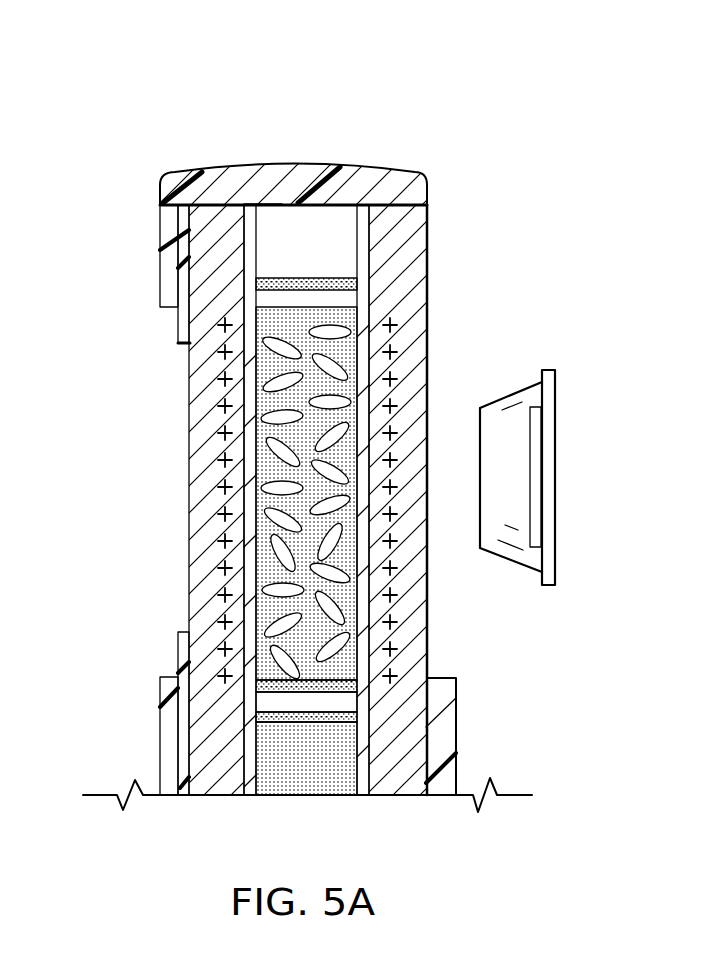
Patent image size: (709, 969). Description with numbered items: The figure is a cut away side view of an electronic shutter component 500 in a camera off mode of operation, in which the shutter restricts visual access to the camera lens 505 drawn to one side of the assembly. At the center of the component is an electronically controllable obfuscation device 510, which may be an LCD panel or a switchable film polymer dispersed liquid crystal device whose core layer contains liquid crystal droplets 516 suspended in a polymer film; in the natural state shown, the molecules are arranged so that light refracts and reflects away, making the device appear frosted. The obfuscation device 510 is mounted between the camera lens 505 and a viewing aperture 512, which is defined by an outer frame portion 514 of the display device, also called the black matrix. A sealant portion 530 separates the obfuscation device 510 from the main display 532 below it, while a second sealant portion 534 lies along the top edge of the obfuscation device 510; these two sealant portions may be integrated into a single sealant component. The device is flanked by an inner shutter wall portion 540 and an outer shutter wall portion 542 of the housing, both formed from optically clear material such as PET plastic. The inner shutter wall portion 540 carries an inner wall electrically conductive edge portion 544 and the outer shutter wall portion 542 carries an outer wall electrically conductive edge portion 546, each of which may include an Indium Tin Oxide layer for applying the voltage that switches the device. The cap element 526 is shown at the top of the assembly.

The electronic shutter component 500 is at (148, 93).
The camera lens 505 is at (556, 477).
The electronically controllable obfuscation device 510 is at (232, 449).
The viewing aperture 512 is at (120, 613).
The outer frame portion 514 is at (180, 325).
The liquid crystal droplets 516 is at (275, 342).
The cap 526 is at (413, 190).
The sealant portion 530 is at (320, 702).
The main display 532 is at (280, 788).
The second sealant portion 534 is at (345, 282).
The inner shutter wall portion 540 is at (390, 370).
The outer shutter wall portion 542 is at (223, 437).
The inner wall electrically conductive edge portion 544 is at (365, 257).
The outer wall electrically conductive edge portion 546 is at (264, 203).